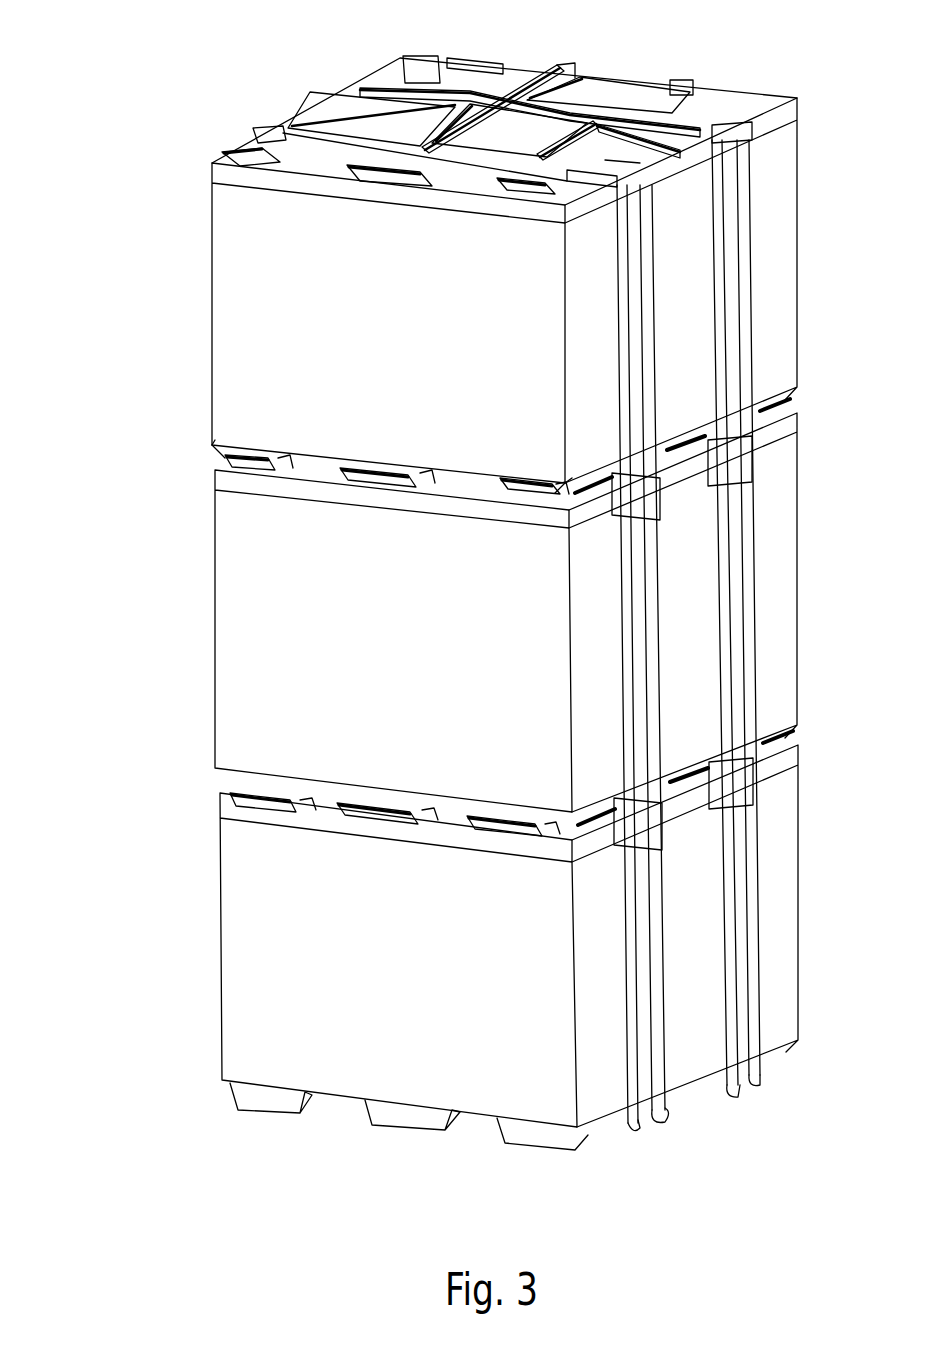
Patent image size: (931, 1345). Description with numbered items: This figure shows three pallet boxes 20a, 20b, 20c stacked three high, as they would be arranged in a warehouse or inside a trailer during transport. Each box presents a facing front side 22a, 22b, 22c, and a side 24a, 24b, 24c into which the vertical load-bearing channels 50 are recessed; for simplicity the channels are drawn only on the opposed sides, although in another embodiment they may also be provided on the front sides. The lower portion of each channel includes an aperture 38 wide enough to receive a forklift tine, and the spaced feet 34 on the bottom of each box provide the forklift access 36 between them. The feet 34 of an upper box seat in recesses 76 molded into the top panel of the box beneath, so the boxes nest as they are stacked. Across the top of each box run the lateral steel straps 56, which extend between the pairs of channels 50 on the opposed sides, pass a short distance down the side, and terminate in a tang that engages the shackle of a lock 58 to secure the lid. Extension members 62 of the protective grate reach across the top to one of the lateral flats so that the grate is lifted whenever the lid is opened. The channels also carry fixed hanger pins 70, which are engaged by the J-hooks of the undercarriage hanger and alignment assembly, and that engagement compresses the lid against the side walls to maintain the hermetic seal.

The pallet box 20a is at (205, 968).
The pallet box 20b is at (200, 648).
The pallet box 20c is at (188, 328).
The front side 22a is at (415, 998).
The front side 22b is at (410, 680).
The front side 22c is at (405, 352).
The side 24a is at (607, 986).
The side 24b is at (604, 656).
The side 24c is at (602, 341).
The feet 34 is at (343, 455).
The forklift access 36 is at (335, 1120).
The aperture 38 is at (650, 1121).
The vertical load-bearing channels 50 is at (730, 335).
The lateral steel straps 56 is at (373, 90).
The lock 58 is at (707, 143).
The extension members 62 is at (688, 85).
The fixed hanger pins 70 is at (710, 523).
The recesses 76 is at (292, 470).